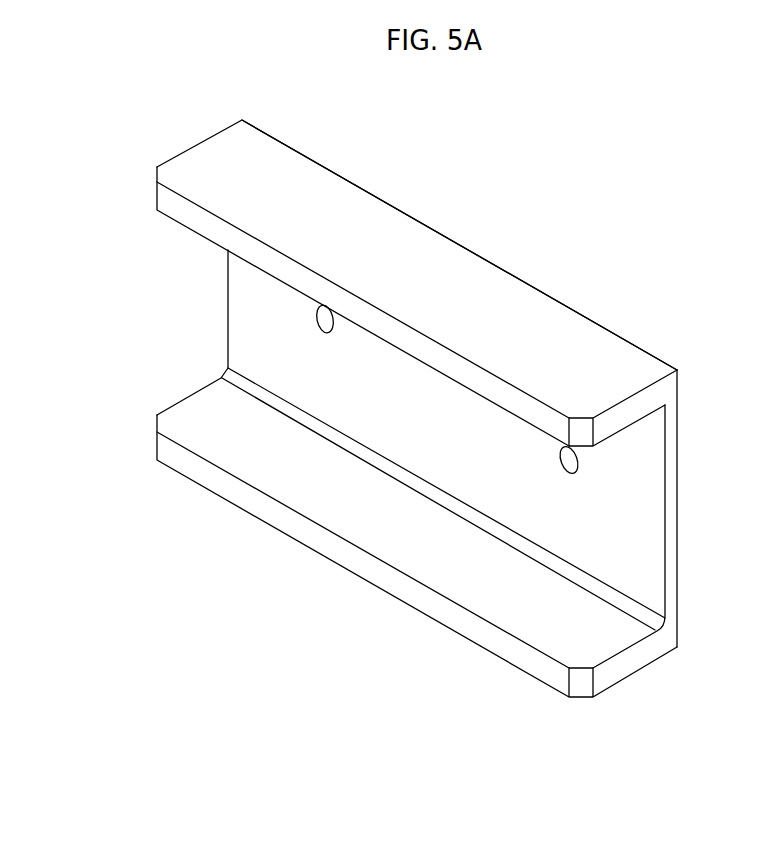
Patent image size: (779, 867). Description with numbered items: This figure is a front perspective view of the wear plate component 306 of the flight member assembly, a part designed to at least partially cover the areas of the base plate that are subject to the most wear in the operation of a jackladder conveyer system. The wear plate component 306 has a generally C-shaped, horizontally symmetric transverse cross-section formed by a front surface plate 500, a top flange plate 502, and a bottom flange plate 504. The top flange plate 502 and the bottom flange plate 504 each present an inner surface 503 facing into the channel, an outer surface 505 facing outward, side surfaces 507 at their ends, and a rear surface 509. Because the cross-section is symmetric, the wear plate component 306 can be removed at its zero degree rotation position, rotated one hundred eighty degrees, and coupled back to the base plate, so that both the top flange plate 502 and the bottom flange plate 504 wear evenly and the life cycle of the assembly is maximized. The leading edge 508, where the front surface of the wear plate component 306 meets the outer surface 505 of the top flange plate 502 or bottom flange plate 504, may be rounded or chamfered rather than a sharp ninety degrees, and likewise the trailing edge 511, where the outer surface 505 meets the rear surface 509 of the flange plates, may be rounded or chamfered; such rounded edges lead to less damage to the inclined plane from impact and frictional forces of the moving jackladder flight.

The front surface plate 500 is at (688, 542).
The top flange plate 502 is at (448, 262).
The inner surface 503 is at (180, 403).
The bottom flange plate 504 is at (417, 591).
The outer surface 505 is at (311, 186).
The side surfaces 507 is at (643, 397).
The leading edge 508 is at (614, 314).
The rear surface 509 is at (175, 204).
The trailing edge 511 is at (242, 537).
The wear plate component 306 is at (489, 690).